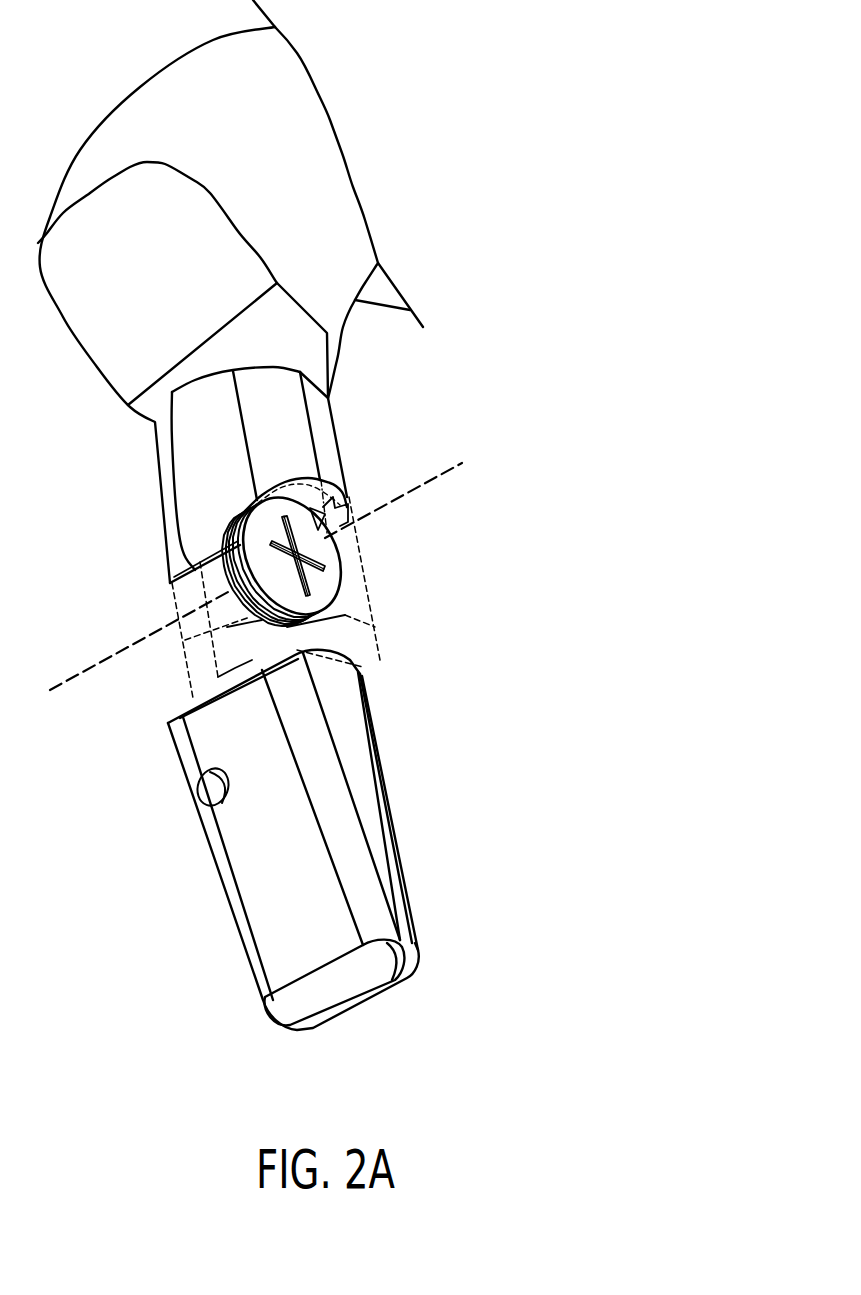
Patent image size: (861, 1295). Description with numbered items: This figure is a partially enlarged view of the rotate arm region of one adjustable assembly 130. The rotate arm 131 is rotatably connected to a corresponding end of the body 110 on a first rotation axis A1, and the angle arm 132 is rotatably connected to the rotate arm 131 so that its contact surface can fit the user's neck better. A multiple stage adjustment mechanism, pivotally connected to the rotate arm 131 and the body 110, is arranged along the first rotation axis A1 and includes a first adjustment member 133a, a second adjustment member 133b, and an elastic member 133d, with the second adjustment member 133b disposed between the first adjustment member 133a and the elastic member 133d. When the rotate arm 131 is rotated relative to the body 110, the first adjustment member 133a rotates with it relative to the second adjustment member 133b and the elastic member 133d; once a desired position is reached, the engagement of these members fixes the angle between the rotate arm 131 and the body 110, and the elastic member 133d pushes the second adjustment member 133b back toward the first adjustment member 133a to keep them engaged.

The body 110 is at (190, 487).
The adjustable assembly 130 is at (445, 707).
The rotate arm 131 is at (185, 603).
The angle arm 132 is at (200, 742).
The first adjustment member 133a is at (323, 584).
The second adjustment member 133b is at (307, 632).
The elastic member 133d is at (257, 623).
The first rotation axis A1 is at (279, 565).